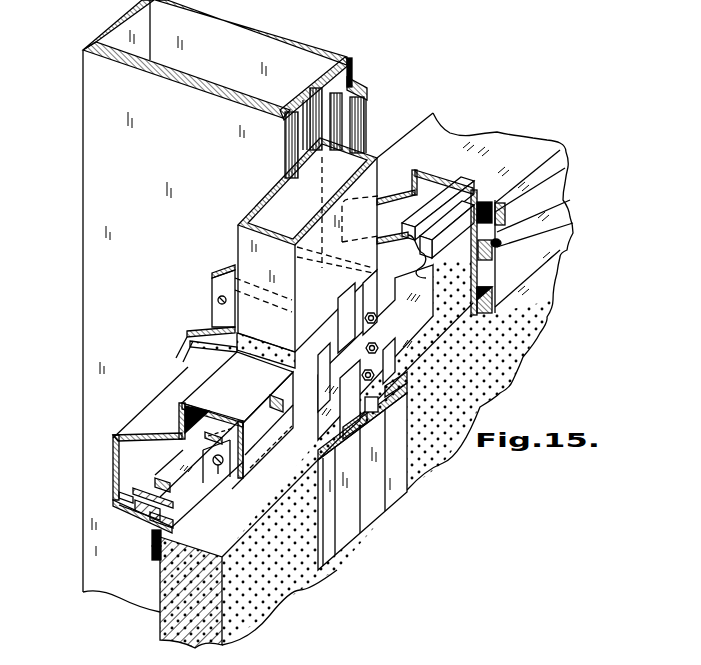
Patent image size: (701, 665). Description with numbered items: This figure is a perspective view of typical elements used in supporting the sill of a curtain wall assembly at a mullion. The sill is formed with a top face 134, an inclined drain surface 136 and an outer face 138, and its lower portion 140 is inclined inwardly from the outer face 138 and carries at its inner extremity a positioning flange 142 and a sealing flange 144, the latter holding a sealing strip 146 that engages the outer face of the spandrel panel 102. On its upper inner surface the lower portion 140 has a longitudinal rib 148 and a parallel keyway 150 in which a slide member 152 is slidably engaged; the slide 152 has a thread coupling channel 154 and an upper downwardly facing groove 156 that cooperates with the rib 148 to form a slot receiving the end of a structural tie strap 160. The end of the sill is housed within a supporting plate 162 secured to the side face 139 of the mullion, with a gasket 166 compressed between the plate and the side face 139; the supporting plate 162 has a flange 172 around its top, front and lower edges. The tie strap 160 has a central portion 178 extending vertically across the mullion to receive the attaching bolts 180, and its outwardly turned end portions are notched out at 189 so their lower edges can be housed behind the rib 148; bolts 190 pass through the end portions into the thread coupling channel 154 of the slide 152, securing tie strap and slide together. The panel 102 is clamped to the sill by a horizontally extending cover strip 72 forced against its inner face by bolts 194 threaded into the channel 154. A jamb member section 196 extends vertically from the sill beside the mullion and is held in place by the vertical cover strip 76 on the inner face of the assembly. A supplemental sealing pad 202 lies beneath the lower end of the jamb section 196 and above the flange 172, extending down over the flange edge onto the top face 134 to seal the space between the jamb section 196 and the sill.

The side face of the mullion 139 is at (113, 168).
The jamb member section 196 is at (285, 194).
The slide member 152 is at (441, 199).
The horizontally extending cover strip 72 is at (550, 240).
The bolts 194 is at (472, 245).
The gasket 166 is at (227, 273).
The supporting plate 162 is at (213, 308).
The flange 172 is at (205, 331).
The top face 134 is at (217, 373).
The supplemental sealing pad 202 is at (264, 349).
The notch 189 is at (278, 394).
The inclined drain surface 136 is at (148, 417).
The outer face 138 is at (113, 458).
The downwardly facing groove 156 is at (162, 480).
The bolts 190 is at (223, 466).
The thread coupling channel 154 is at (122, 496).
The lower portion of the sill 140 is at (120, 507).
The keyway 150 is at (147, 517).
The positioning flange 142 is at (203, 508).
The rib 148 is at (185, 520).
The sealing flange 144 is at (160, 534).
The sealing strip 146 is at (158, 563).
The central portion of the tie strap 178 is at (313, 408).
The attaching bolts 180 is at (375, 319).
The structural tie strap 160 is at (425, 318).
The vertical cover strip 76 is at (396, 494).
The panel 102 is at (284, 580).